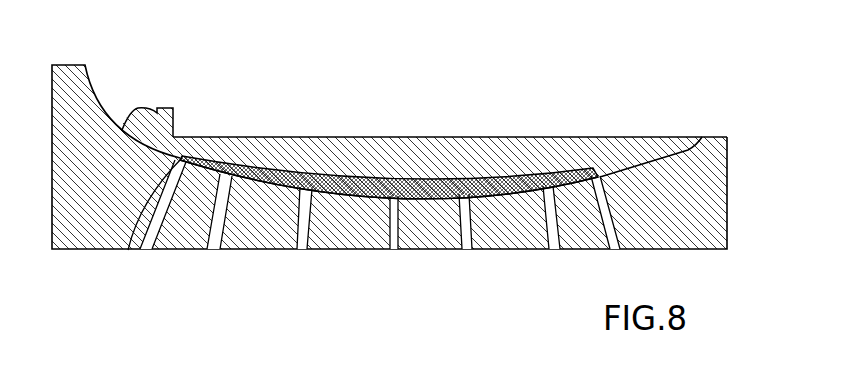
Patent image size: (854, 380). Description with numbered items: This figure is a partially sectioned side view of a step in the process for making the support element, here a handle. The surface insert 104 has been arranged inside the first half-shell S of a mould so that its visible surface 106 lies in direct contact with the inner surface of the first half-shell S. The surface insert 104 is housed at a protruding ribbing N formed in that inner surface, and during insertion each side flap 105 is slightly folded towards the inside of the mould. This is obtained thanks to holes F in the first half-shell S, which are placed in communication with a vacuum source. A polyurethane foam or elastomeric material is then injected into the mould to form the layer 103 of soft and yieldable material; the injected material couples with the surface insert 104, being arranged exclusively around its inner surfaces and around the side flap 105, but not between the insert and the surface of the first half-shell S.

The layer of soft and yieldable material 103 is at (443, 152).
The surface insert 104 is at (345, 183).
The side flap 105 is at (181, 156).
The visible surface 106 is at (426, 212).
The first half-shell S is at (91, 214).
The protruding ribbing N is at (128, 250).
The holes F is at (303, 241).